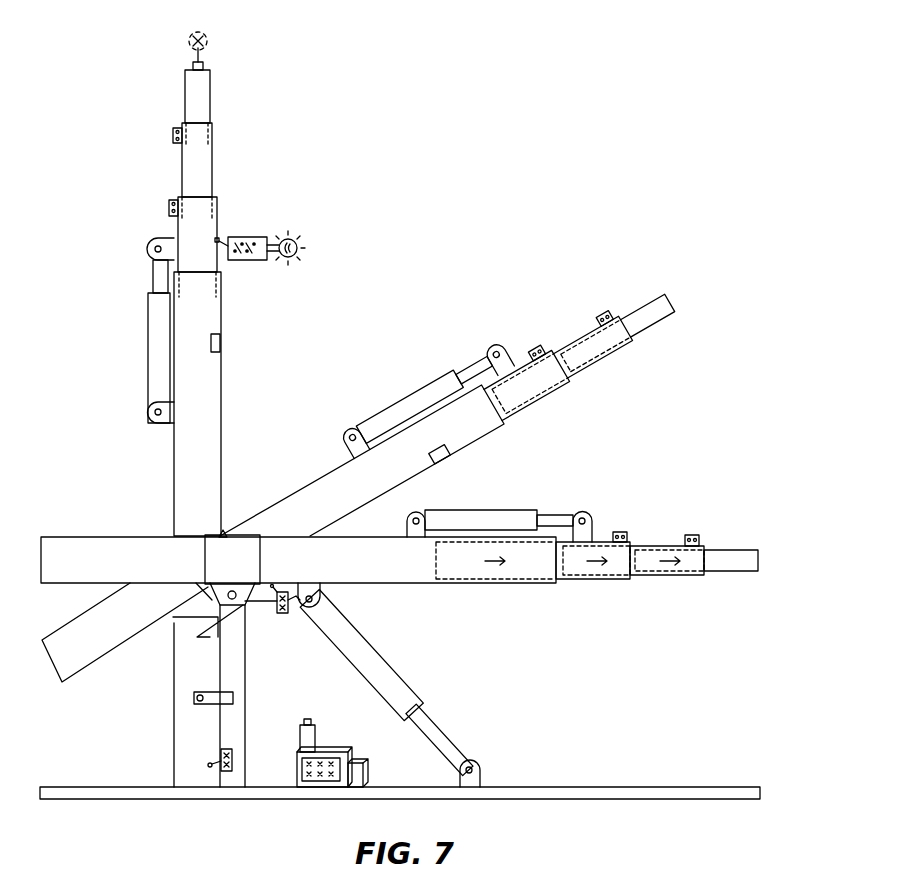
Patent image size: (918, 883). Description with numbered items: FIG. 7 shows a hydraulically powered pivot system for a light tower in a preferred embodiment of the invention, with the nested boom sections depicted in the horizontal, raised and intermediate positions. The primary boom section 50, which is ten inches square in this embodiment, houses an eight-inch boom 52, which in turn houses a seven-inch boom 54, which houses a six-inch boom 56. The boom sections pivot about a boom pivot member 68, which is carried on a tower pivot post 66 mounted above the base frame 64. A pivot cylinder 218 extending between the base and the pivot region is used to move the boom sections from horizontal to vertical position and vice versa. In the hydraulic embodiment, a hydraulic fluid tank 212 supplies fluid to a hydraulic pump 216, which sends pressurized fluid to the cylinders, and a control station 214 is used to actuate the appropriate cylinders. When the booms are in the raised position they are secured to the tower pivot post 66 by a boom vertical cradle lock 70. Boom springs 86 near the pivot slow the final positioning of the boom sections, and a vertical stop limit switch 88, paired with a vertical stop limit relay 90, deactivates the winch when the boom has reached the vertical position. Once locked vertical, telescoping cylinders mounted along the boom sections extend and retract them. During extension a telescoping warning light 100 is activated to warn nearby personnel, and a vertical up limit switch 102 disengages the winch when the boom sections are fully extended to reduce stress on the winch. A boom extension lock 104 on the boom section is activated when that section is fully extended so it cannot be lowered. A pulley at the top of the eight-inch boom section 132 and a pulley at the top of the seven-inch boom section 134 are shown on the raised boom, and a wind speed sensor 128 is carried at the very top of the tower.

The wind speed sensor 128 is at (195, 33).
The pulley at the top of the 7-inch boom section 134 is at (172, 136).
The pulley at the top of the 8-inch boom section 132 is at (168, 208).
The telescoping warning light 100 is at (291, 237).
The vertical up limit switch 102 is at (248, 262).
The boom extension lock 104 is at (221, 342).
The boom pivot member 68 is at (228, 570).
The primary boom section 50 is at (510, 585).
The 8-inch boom 52 is at (598, 581).
The 7-inch boom 54 is at (668, 577).
The six-inch boom 56 is at (732, 573).
The boom springs 86 is at (200, 630).
The vertical stop limit relay 90 is at (288, 614).
The tower pivot post 66 is at (240, 662).
The pivot cylinder 218 is at (380, 654).
The boom vertical cradle lock 70 is at (212, 707).
The vertical stop limit switch 88 is at (228, 749).
The hydraulic fluid tank 212 is at (316, 740).
The control station 214 is at (352, 760).
The hydraulic pump 216 is at (370, 776).
The base frame 64 is at (600, 787).